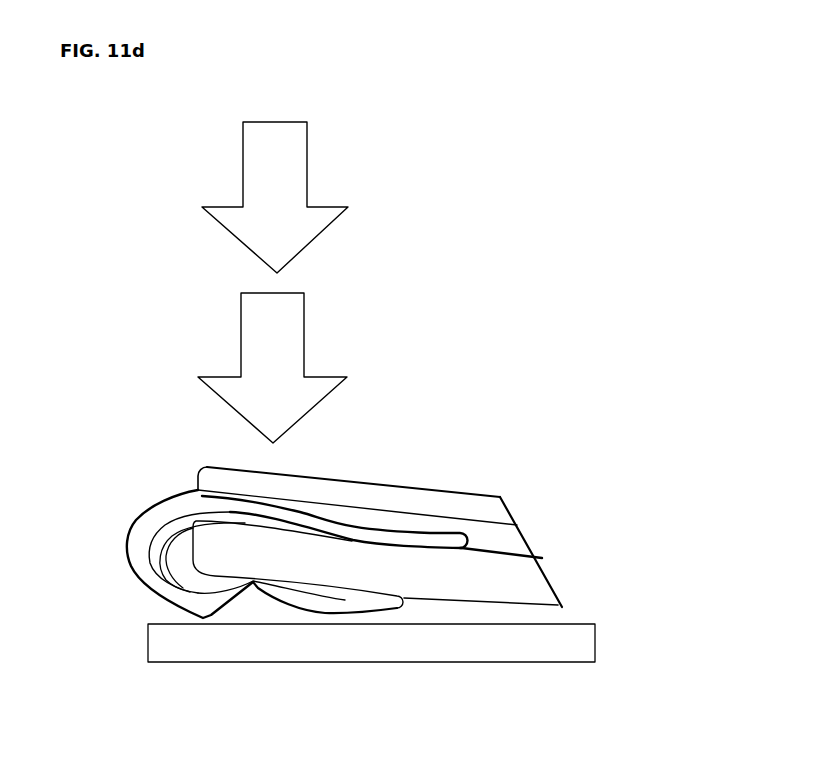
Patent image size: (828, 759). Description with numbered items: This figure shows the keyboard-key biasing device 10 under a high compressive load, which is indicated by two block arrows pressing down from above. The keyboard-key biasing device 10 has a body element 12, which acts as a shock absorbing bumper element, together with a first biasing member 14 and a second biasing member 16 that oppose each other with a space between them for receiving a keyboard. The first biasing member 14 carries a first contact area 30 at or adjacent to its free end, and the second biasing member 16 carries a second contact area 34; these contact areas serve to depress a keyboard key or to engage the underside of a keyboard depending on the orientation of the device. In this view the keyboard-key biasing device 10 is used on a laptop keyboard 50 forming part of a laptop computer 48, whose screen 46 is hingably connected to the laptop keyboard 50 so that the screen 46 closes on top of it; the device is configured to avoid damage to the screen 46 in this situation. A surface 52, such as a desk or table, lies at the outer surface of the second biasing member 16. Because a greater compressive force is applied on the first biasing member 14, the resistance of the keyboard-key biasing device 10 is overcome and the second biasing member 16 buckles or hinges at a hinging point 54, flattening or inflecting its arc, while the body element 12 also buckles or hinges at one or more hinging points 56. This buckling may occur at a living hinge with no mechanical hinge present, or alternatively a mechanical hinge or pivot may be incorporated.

The keyboard-key biasing device 10 is at (144, 510).
The body element 12 is at (121, 531).
The first biasing member 14 is at (348, 525).
The second biasing member 16 is at (325, 615).
The first contact area 30 is at (420, 558).
The second contact area 34 is at (393, 585).
The screen 46 is at (199, 468).
The laptop computer 48 is at (194, 478).
The laptop keyboard 50 is at (552, 583).
The surface 52 is at (552, 617).
The hinging point 54 is at (253, 592).
The hinging points 56 is at (127, 546).